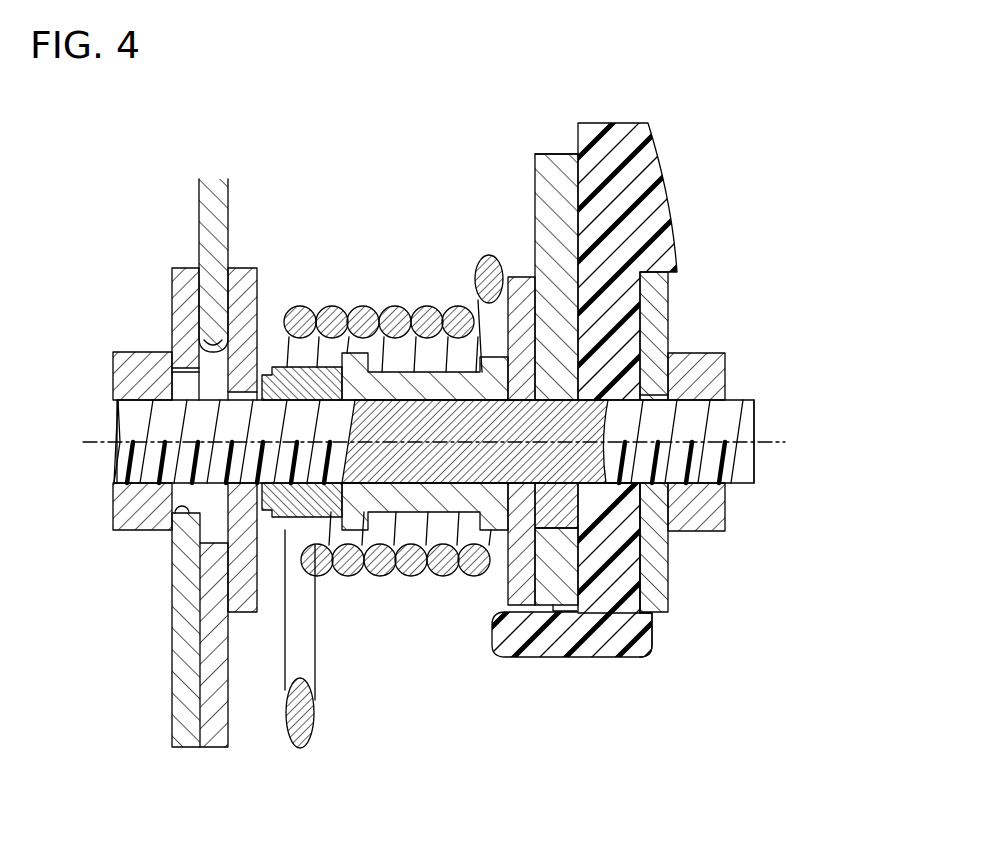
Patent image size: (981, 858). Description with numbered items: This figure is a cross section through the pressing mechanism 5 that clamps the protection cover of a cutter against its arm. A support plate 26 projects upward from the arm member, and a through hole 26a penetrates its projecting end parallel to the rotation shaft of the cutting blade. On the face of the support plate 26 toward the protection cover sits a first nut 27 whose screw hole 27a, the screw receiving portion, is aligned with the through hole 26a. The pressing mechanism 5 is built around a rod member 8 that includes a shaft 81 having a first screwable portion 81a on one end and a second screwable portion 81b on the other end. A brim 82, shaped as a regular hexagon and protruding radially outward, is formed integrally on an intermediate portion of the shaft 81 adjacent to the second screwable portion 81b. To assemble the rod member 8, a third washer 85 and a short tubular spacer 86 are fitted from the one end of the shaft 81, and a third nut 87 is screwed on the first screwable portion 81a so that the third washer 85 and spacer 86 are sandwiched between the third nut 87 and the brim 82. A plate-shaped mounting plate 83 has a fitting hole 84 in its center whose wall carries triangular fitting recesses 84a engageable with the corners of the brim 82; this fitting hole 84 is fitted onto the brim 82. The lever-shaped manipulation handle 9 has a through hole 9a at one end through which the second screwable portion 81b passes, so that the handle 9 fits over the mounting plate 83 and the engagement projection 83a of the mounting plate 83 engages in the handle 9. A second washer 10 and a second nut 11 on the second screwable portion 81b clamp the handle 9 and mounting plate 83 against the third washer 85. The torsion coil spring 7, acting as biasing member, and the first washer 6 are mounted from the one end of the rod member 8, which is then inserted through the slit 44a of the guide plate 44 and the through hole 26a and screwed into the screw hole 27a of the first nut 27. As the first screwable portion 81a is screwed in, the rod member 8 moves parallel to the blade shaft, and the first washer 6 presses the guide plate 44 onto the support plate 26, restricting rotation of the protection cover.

The pressing mechanism 5 is at (378, 156).
The first washer 6 is at (243, 267).
The torsion coil spring 7 is at (366, 306).
The rod member 8 is at (590, 716).
The manipulation handle 9 is at (678, 217).
The through hole 9a is at (630, 470).
The second washer 10 is at (672, 296).
The second nut 11 is at (701, 342).
The support plate 26 is at (172, 660).
The through hole 26a is at (165, 532).
The first nut 27 is at (123, 350).
The screw hole 27a is at (120, 406).
The guide plate 44 is at (198, 195).
The slit 44a is at (203, 348).
The shaft 81 is at (393, 484).
The first screwable portion 81a is at (120, 459).
The second screwable portion 81b is at (748, 416).
The brim 82 is at (550, 530).
The mounting plate 83 is at (545, 612).
The engagement projection 83a is at (546, 157).
The fitting hole 84 is at (585, 530).
The fitting recesses 84a is at (646, 635).
The third washer 85 is at (508, 582).
The spacer 86 is at (438, 516).
The third nut 87 is at (318, 578).